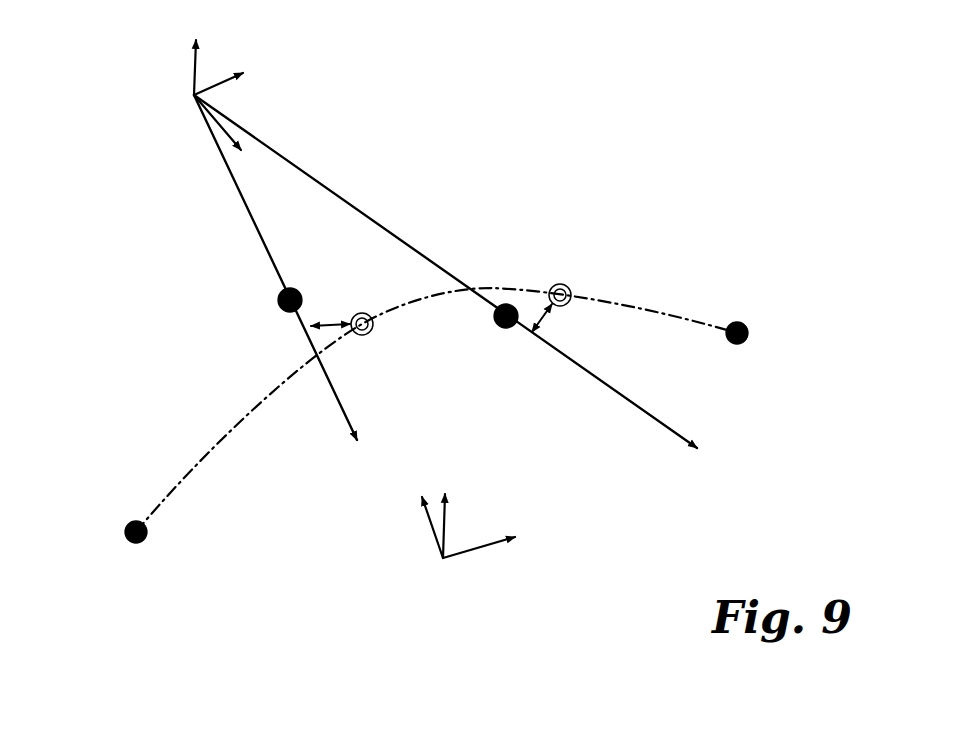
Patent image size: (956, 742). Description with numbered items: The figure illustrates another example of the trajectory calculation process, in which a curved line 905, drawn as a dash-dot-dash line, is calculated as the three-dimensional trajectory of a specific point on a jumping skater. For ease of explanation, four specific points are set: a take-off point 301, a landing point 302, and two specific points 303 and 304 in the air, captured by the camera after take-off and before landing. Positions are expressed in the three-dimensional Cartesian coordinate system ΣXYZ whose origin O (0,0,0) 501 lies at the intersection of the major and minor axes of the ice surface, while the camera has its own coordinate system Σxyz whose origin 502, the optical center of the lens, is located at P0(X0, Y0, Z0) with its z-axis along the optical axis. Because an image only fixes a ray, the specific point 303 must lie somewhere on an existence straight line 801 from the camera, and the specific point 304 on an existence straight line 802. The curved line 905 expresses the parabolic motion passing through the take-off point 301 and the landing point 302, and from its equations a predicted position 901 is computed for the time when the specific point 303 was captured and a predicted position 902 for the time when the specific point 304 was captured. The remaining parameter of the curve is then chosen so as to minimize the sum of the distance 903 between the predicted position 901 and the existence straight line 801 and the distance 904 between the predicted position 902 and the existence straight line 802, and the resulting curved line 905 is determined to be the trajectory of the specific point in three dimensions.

The take-off point 301 is at (130, 515).
The landing point 302 is at (745, 324).
The specific point in the air 303 is at (279, 293).
The specific point in the air 304 is at (506, 330).
The origin O (0,0,0) 501 is at (440, 562).
The origin of coordinate system Σxyz 502 is at (188, 104).
The existence straight line 801 is at (341, 400).
The existence straight line 802 is at (678, 430).
The predicted position 901 is at (363, 337).
The predicted position 902 is at (567, 285).
The distance 903 is at (328, 321).
The distance 904 is at (556, 314).
The curved line 905 is at (507, 284).